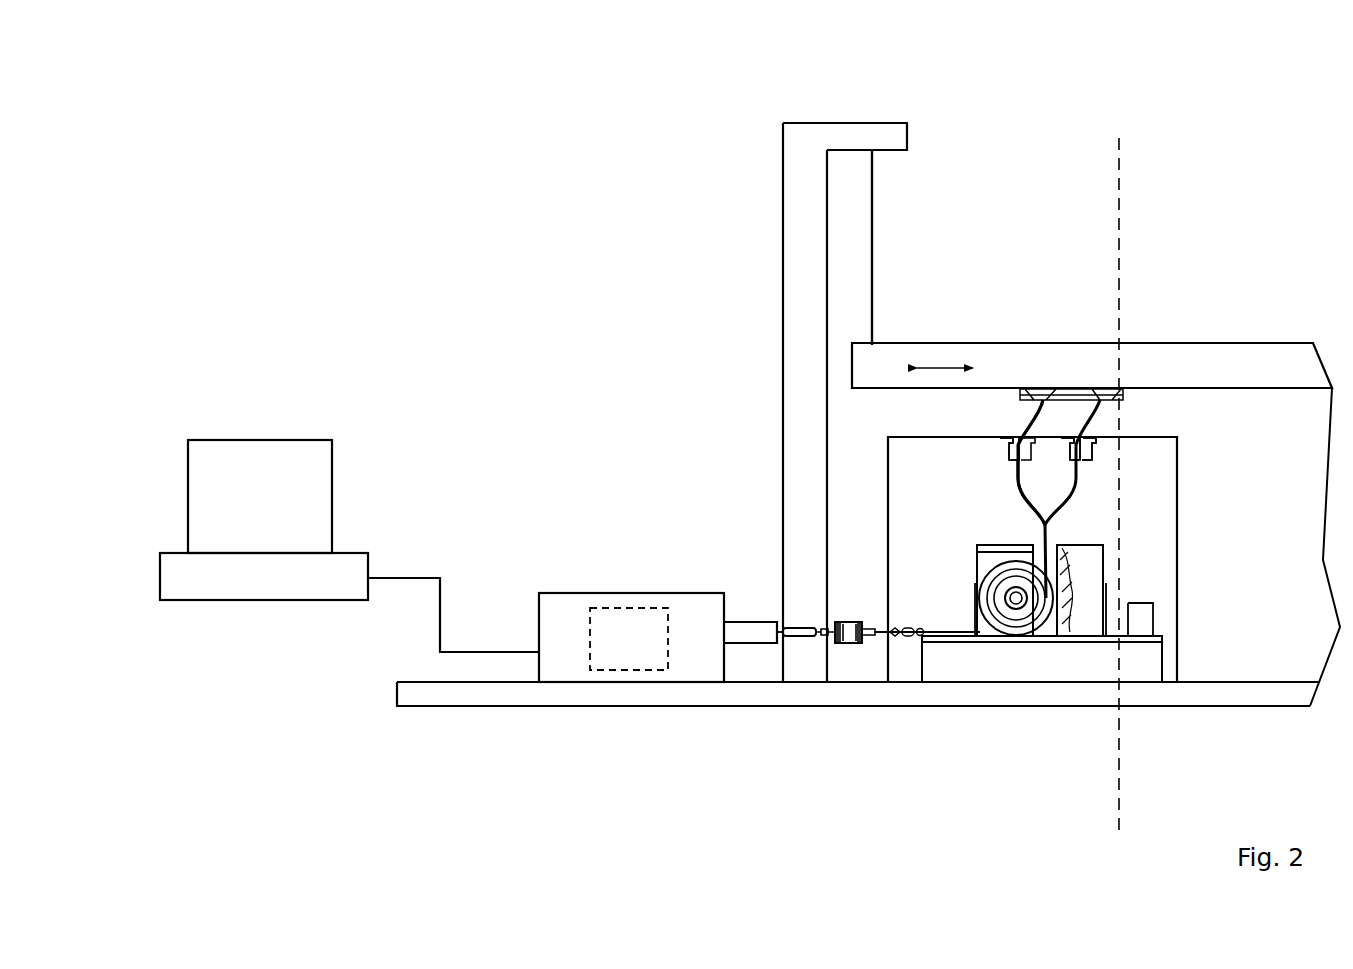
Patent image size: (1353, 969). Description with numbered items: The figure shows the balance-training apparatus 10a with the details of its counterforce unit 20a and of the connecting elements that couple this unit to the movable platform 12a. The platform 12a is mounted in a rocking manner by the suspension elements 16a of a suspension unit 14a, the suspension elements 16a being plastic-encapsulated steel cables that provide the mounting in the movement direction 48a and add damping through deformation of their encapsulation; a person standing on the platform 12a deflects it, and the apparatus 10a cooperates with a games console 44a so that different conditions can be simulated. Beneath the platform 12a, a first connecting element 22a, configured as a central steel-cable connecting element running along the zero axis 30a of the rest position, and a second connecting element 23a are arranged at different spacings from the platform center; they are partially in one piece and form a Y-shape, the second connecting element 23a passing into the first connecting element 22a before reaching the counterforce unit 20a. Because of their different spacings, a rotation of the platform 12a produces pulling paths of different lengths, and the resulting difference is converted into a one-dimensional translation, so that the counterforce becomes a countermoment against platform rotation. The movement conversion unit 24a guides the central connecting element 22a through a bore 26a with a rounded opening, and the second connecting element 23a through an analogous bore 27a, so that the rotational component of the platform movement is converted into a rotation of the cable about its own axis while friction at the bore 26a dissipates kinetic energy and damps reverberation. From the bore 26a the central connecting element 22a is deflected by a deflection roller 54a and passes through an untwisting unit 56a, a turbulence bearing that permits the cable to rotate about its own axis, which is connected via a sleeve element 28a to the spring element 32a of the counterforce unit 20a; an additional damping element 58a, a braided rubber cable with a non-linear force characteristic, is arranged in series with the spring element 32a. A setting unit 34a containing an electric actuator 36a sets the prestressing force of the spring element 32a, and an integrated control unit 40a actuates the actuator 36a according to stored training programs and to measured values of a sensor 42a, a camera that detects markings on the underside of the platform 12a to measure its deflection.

The apparatus 10a is at (663, 150).
The movable platform 12a is at (1055, 368).
The suspension unit 14a is at (743, 152).
The suspension elements 16a is at (872, 260).
The counterforce unit 20a is at (1056, 714).
The first connecting element 22a is at (1097, 417).
The second connecting element 23a is at (1027, 413).
The movement conversion unit 24a is at (1002, 466).
The bore 26a is at (1087, 452).
The bore 27a is at (997, 448).
The sleeve element 28a is at (873, 636).
The zero axis 30a is at (1119, 255).
The spring element 32a is at (832, 645).
The setting unit 34a is at (626, 684).
The electric actuator 36a is at (748, 643).
The control unit 40a is at (603, 648).
The sensor 42a is at (1205, 625).
The games console 44a is at (270, 590).
The movement direction 48a is at (945, 366).
The deflection roller 54a is at (995, 575).
The untwisting unit 56a is at (903, 642).
The additional damping element 58a is at (800, 632).